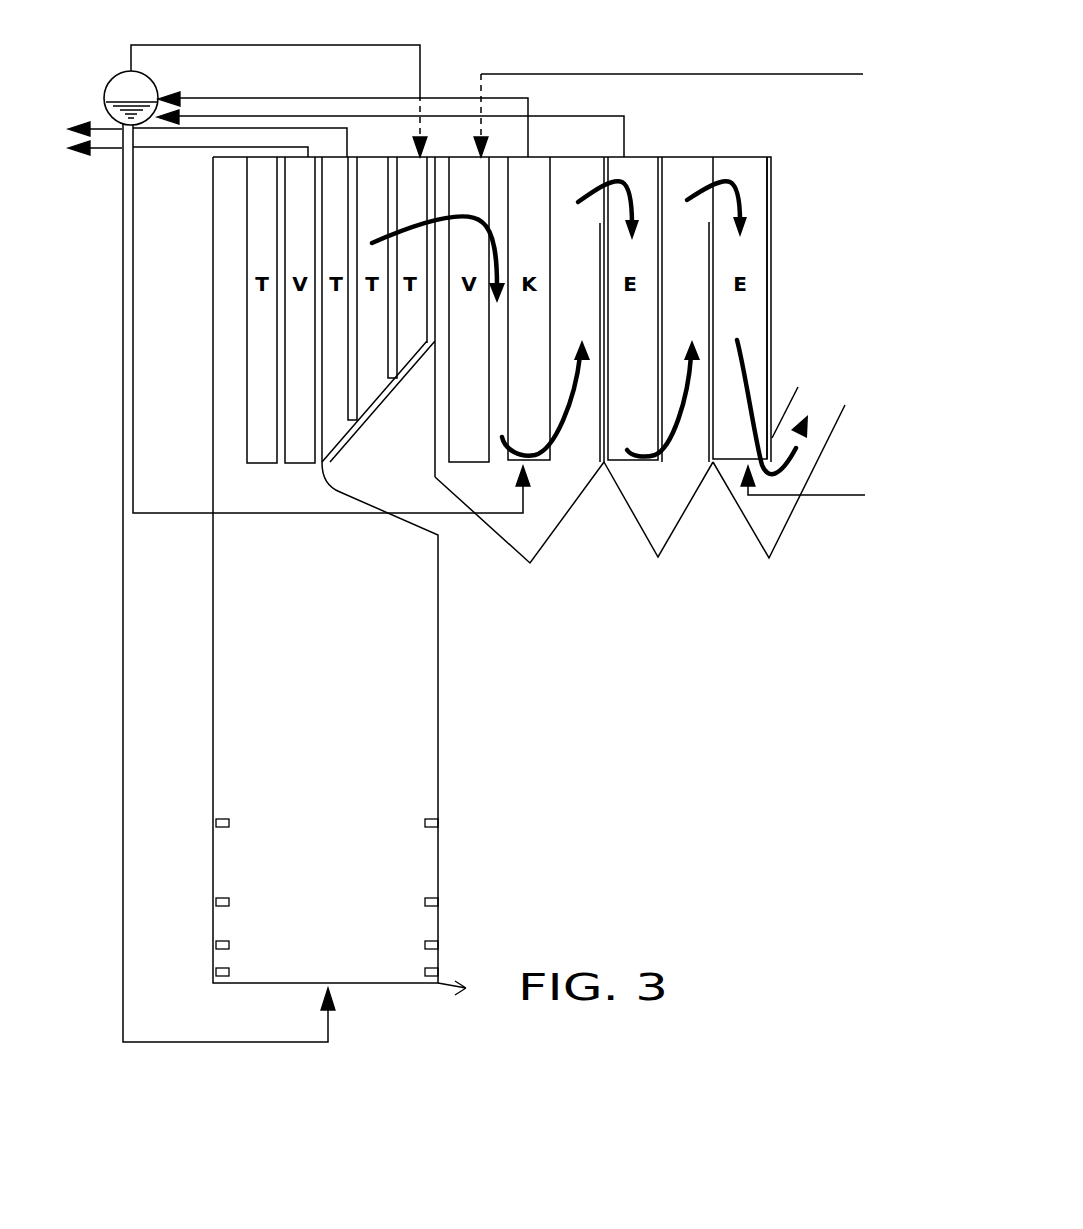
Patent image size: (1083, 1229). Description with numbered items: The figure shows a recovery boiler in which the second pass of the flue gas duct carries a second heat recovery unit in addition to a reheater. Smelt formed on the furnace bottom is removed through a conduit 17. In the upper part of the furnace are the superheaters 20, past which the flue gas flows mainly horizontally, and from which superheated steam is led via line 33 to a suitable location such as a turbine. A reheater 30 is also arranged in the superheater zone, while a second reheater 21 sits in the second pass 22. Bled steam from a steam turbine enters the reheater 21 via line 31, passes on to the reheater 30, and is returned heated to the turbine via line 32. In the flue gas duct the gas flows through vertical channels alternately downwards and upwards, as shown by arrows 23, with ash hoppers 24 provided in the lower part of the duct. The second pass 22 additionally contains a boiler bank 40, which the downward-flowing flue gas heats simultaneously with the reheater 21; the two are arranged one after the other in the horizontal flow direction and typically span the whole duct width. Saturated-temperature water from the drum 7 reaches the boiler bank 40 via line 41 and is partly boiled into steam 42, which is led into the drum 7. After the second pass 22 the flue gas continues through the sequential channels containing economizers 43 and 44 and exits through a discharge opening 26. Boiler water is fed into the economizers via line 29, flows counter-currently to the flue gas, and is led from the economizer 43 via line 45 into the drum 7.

The drum 7 is at (158, 78).
The conduit 17 is at (453, 990).
The superheaters 20 is at (257, 453).
The second reheater 21 is at (467, 445).
The second pass 22 is at (447, 405).
The arrows 23 is at (565, 437).
The ash hoppers 24 is at (530, 523).
The discharge opening 26 is at (815, 395).
The line 29 is at (815, 497).
The reheater 30 is at (300, 453).
The line 31 is at (752, 73).
The line 32 is at (168, 150).
The line 33 is at (347, 141).
The boiler bank 40 is at (527, 319).
The line 41 is at (192, 512).
The steam 42 is at (528, 98).
The economizer 43 is at (638, 319).
The economizer 44 is at (765, 242).
The line 45 is at (626, 136).